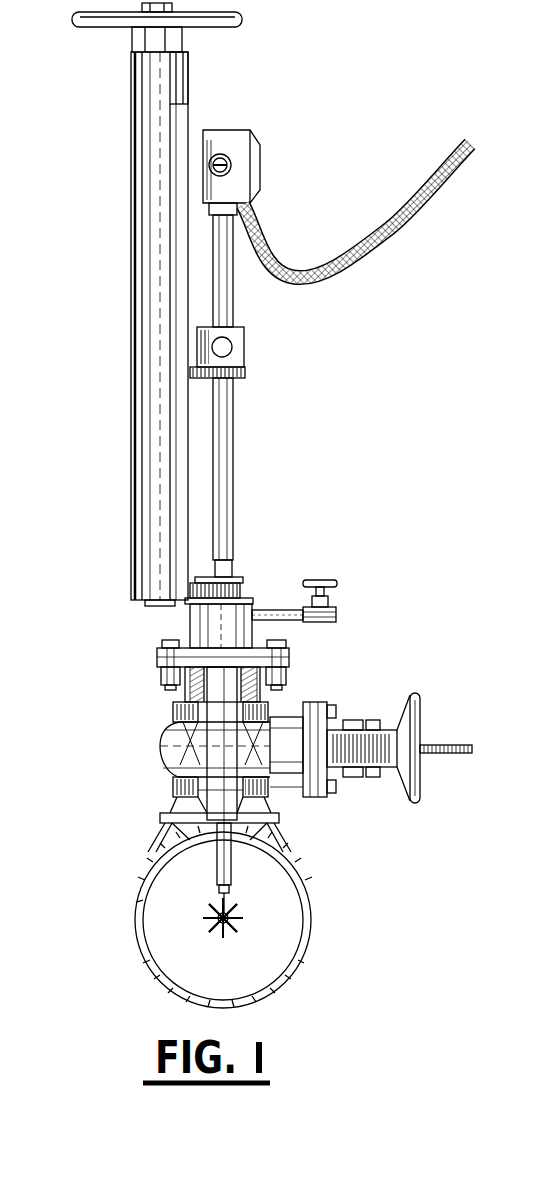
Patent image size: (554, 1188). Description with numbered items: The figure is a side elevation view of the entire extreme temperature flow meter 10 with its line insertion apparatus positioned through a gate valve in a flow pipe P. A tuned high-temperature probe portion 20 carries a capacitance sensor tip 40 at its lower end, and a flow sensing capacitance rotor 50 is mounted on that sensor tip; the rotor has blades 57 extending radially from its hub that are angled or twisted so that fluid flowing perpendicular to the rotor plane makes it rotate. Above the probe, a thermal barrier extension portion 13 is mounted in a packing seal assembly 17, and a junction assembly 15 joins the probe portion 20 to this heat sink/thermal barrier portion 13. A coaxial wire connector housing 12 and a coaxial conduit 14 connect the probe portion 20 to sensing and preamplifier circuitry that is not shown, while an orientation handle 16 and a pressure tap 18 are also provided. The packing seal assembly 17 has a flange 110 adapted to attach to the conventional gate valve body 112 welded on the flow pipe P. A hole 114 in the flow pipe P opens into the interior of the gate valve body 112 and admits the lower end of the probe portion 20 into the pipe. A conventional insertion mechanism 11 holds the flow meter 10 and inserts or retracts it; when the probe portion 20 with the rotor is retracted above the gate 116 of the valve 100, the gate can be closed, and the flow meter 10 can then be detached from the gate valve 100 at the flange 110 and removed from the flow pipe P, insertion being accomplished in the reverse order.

The extreme temperature flow meter 10 is at (242, 450).
The insertion mechanism 11 is at (190, 82).
The coaxial wire connector housing 12 is at (240, 130).
The thermal barrier extension portion 13 is at (233, 242).
The coaxial conduit 14 is at (276, 250).
The junction assembly 15 is at (244, 332).
The orientation handle 16 is at (230, 354).
The packing seal assembly 17 is at (260, 603).
The pressure tap 18 is at (333, 605).
The tuned high-temperature probe portion 20 is at (190, 768).
The capacitance sensor tip 40 is at (231, 890).
The flow sensing capacitance rotor 50 is at (250, 913).
The blades 57 is at (236, 925).
The gate valve 100 is at (290, 712).
The flange 110 is at (183, 648).
The gate valve body 112 is at (172, 717).
The hole 114 is at (160, 818).
The gate 116 is at (270, 788).
The flow pipe P is at (135, 915).